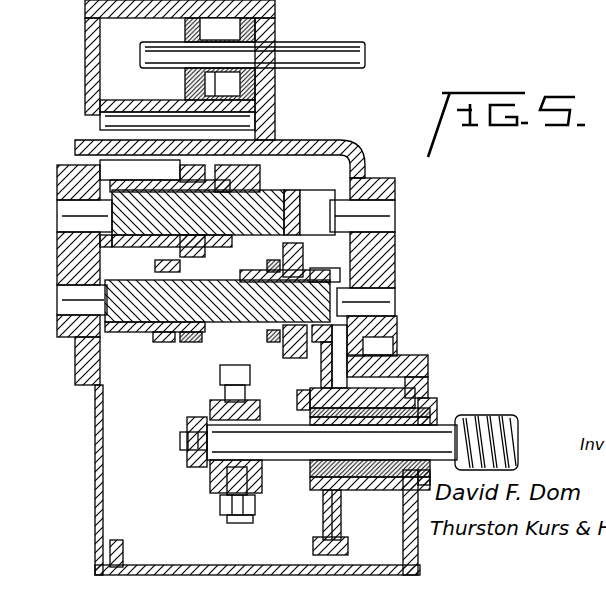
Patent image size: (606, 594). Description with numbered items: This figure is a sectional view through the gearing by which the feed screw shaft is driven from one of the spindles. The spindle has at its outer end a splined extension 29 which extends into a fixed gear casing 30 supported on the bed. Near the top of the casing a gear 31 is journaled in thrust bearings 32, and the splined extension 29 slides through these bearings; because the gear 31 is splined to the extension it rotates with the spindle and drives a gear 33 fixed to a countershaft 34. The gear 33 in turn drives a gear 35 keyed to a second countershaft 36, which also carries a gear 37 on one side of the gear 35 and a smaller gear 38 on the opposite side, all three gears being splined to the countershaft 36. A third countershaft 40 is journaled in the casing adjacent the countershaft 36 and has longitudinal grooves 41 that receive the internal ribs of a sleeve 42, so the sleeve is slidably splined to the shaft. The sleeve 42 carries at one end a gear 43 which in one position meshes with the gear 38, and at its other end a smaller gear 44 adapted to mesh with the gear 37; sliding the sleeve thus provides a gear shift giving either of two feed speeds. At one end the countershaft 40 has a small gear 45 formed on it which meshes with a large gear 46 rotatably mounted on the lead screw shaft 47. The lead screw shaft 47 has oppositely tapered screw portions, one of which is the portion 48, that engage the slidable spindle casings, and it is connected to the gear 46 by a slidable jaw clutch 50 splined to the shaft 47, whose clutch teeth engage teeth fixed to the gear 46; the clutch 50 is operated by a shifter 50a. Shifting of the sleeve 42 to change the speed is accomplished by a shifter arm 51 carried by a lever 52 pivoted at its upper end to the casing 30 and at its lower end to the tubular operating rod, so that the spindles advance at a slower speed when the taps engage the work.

The splined extension 29 is at (356, 60).
The fixed gear casing 30 is at (345, 148).
The gear 31 is at (240, 24).
The thrust bearings 32 is at (185, 32).
The gear 33 is at (185, 88).
The countershaft 34 is at (275, 127).
The gear 35 is at (238, 175).
The second countershaft 36 is at (316, 196).
The gear 37 is at (180, 170).
The smaller gear 38 is at (223, 199).
The third countershaft 40 is at (153, 318).
The longitudinal grooves 41 is at (135, 318).
The sleeve 42 is at (207, 344).
The gear 43 is at (283, 345).
The smaller gear 44 is at (190, 342).
The small gear 45 is at (322, 275).
The large gear 46 is at (315, 375).
The lead screw shaft 47 is at (442, 420).
The tapered screw portion 48 is at (492, 414).
The slidable jaw clutch 50 is at (210, 478).
The shifter 50a is at (226, 515).
The shifter arm 51 is at (270, 262).
The lever 52 is at (273, 266).